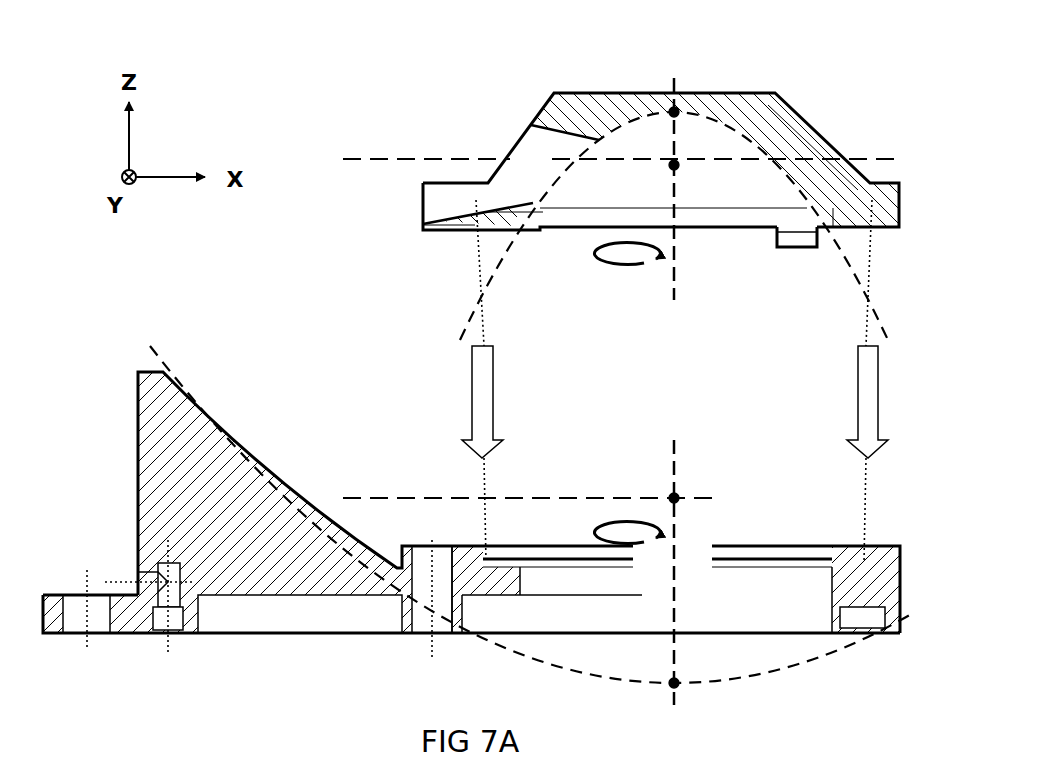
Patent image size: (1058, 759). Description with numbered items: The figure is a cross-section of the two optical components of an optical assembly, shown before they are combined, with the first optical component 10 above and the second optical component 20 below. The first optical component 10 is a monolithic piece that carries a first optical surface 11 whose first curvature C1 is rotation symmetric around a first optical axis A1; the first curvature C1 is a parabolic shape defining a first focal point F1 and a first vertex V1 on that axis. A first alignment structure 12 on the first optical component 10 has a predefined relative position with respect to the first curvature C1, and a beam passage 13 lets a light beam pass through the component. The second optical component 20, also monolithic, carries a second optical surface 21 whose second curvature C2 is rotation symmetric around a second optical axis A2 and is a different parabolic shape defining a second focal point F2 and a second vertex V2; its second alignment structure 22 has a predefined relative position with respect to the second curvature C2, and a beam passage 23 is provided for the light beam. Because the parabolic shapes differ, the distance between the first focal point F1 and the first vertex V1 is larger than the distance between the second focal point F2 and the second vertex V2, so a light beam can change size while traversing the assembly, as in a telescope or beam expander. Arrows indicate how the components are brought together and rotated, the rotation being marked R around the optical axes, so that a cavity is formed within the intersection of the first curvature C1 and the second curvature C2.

The first optical component 10 is at (776, 110).
The first optical surface 11 is at (770, 208).
The first alignment structure 12 is at (480, 237).
The beam passage 13 is at (520, 176).
The second optical component 20 is at (273, 558).
The second optical surface 21 is at (274, 426).
The second alignment structure 22 is at (488, 555).
The beam passage 23 is at (750, 614).
The first optical axis A1 is at (675, 70).
The second optical axis A2 is at (675, 434).
The first vertex V1 is at (664, 105).
The second vertex V2 is at (683, 690).
The first focal point F1 is at (667, 172).
The second focal point F2 is at (668, 493).
The first curvature C1 is at (766, 164).
The second curvature C2 is at (276, 486).
The rotation direction R is at (627, 413).